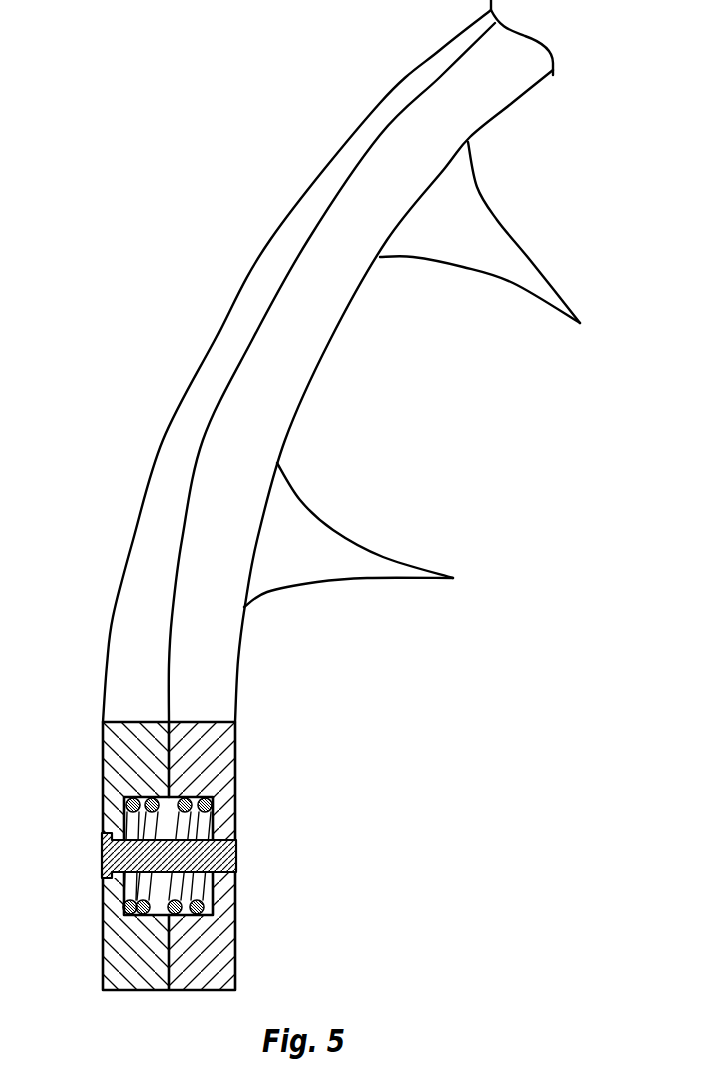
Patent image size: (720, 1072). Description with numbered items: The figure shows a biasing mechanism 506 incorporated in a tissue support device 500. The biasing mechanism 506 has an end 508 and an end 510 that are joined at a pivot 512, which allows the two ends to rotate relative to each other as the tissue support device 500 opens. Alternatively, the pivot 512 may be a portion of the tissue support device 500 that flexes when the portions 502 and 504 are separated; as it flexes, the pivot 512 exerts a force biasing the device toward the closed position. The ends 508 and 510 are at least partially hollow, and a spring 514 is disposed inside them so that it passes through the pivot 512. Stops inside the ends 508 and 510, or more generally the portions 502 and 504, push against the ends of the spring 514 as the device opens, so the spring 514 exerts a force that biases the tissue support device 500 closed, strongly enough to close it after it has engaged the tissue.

The tissue support device 500 is at (337, 692).
The portion 502 is at (235, 333).
The portion 504 is at (303, 363).
The biasing mechanism 506 is at (259, 857).
The end 508 is at (102, 778).
The end 510 is at (236, 948).
The pivot 512 is at (102, 857).
The spring 514 is at (198, 890).